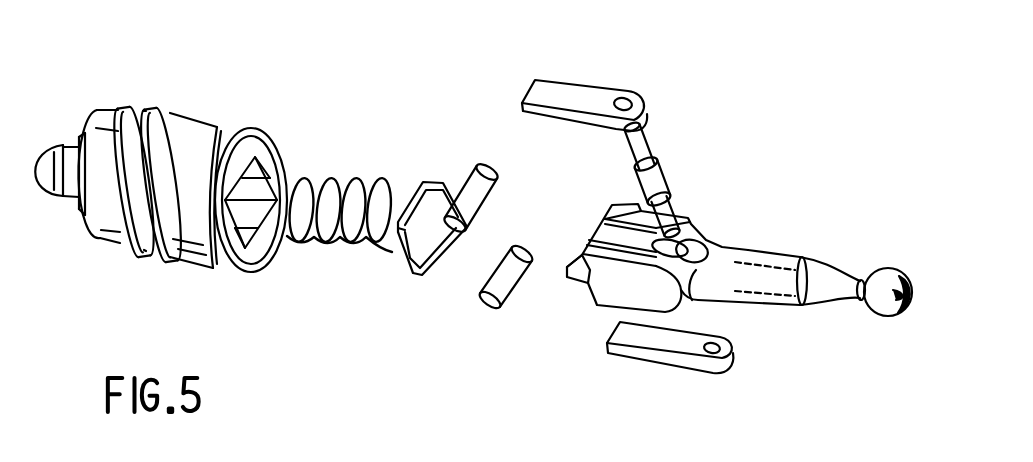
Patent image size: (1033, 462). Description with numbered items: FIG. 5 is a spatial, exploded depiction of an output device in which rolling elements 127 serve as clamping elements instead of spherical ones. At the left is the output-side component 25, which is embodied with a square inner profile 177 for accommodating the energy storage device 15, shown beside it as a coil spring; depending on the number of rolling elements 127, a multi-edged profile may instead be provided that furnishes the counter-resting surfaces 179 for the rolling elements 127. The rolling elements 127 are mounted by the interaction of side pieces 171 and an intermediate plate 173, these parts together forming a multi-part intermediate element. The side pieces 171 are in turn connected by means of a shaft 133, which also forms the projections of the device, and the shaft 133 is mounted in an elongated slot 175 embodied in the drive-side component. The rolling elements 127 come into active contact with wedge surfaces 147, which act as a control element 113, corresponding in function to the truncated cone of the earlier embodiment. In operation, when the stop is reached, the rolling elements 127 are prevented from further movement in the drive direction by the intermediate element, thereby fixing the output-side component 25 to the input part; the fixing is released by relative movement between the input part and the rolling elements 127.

The output-side component 25 is at (223, 140).
The square inner profile 177 is at (297, 118).
The counter-resting surfaces 179 is at (260, 300).
The energy storage device 15 is at (352, 294).
The intermediate plate 173 is at (417, 203).
The rolling elements 127 is at (477, 187).
The side pieces 171 is at (617, 63).
The shaft 133 is at (687, 140).
The control element 113 is at (562, 340).
The wedge surfaces 147 is at (572, 262).
The elongated slot 175 is at (723, 200).